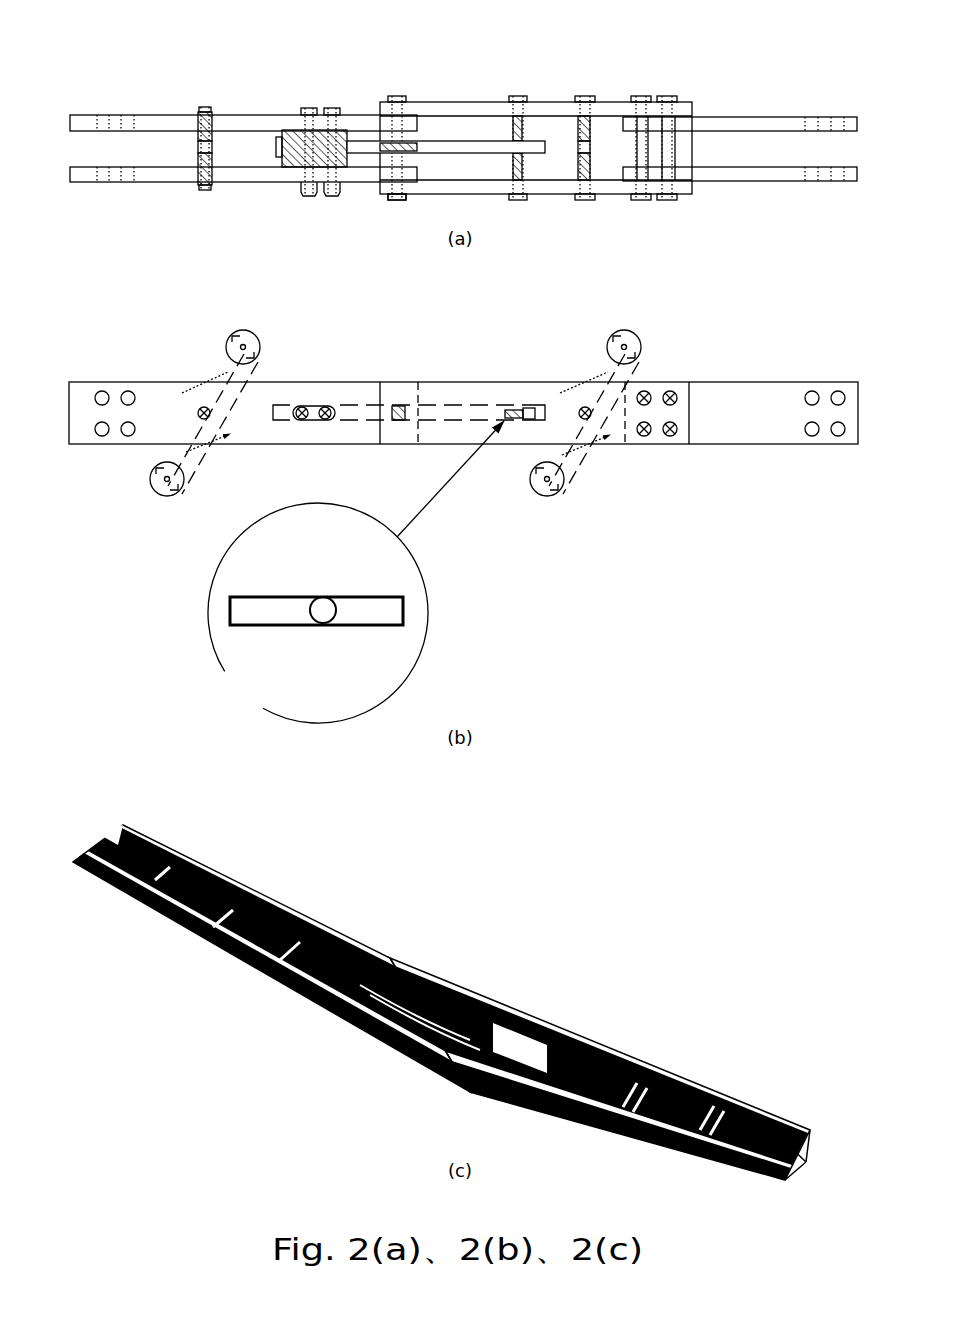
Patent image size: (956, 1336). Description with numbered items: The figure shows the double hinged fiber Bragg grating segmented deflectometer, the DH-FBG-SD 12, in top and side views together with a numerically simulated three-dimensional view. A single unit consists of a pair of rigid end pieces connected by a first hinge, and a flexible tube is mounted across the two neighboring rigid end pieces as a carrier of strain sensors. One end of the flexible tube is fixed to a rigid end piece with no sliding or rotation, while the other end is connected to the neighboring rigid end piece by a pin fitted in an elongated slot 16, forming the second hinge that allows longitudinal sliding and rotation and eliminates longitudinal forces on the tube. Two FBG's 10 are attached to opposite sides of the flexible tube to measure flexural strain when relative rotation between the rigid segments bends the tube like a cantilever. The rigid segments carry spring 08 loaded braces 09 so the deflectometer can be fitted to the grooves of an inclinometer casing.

The spring 08 is at (582, 377).
The brace 09 is at (634, 335).
The fiber Bragg grating 10 is at (408, 146).
The DH-FBG-SD 12 is at (381, 966).
The elongated slot 16 is at (388, 610).